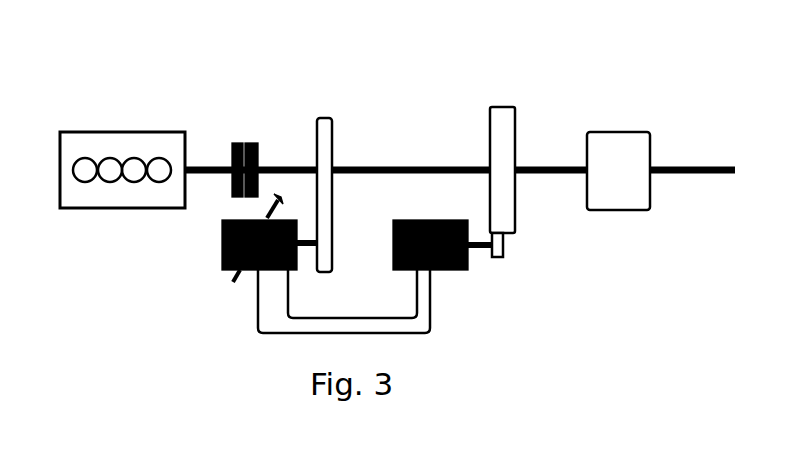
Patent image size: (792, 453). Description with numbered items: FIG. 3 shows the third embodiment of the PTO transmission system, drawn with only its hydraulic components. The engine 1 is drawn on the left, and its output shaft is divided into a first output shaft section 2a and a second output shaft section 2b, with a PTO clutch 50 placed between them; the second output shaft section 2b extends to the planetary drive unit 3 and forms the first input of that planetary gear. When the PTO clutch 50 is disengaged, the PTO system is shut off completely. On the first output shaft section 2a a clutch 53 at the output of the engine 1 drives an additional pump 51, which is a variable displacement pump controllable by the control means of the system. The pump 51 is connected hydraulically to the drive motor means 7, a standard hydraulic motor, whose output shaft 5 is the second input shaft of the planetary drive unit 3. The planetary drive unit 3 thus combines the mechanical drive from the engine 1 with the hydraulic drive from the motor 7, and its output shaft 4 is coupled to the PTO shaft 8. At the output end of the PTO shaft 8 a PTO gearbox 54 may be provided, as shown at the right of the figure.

The engine 1 is at (90, 208).
The first output shaft section 2a is at (197, 162).
The second output shaft section 2b is at (373, 163).
The planetary drive unit 3 is at (498, 107).
The output shaft of planetary drive unit 4 is at (528, 166).
The output shaft of drive motor means 5 is at (475, 252).
The drive motor means 7 is at (465, 270).
The PTO shaft 8 is at (708, 177).
The PTO clutch 50 is at (327, 118).
The additional pump 51 is at (222, 250).
The clutch 53 is at (240, 142).
The PTO gearbox 54 is at (608, 133).